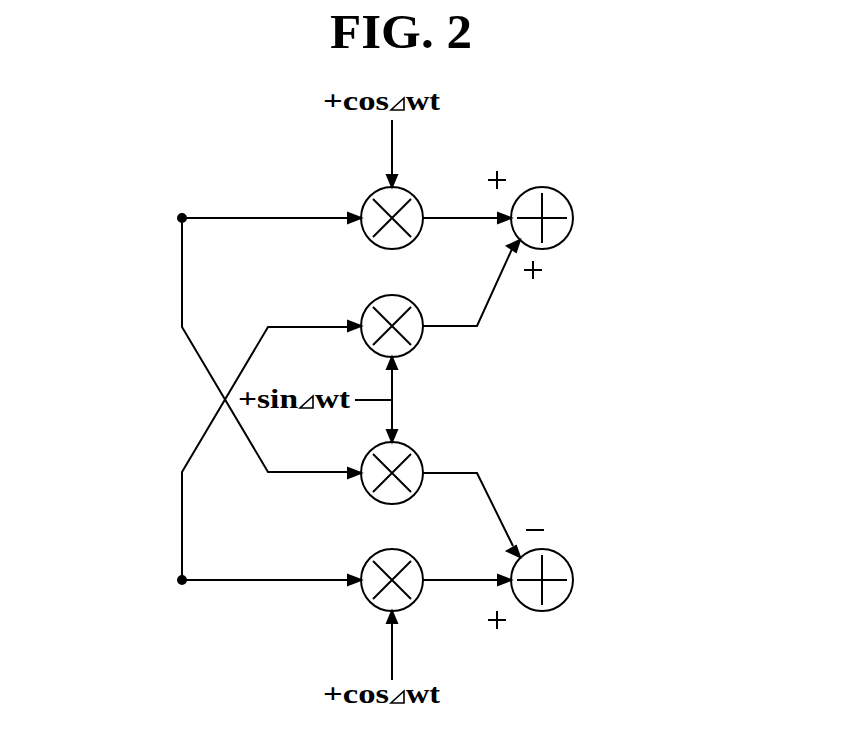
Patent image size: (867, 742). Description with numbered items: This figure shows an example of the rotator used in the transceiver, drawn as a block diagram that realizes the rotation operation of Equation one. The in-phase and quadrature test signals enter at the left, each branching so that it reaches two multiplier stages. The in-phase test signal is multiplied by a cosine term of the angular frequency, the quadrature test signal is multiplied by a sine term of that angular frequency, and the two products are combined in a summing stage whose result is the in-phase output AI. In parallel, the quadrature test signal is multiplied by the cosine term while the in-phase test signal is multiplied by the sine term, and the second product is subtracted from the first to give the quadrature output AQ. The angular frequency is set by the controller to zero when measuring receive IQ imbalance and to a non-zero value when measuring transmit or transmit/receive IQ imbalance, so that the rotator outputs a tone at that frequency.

The in-phase rotator output AI is at (573, 218).
The quadrature rotator output AQ is at (573, 580).